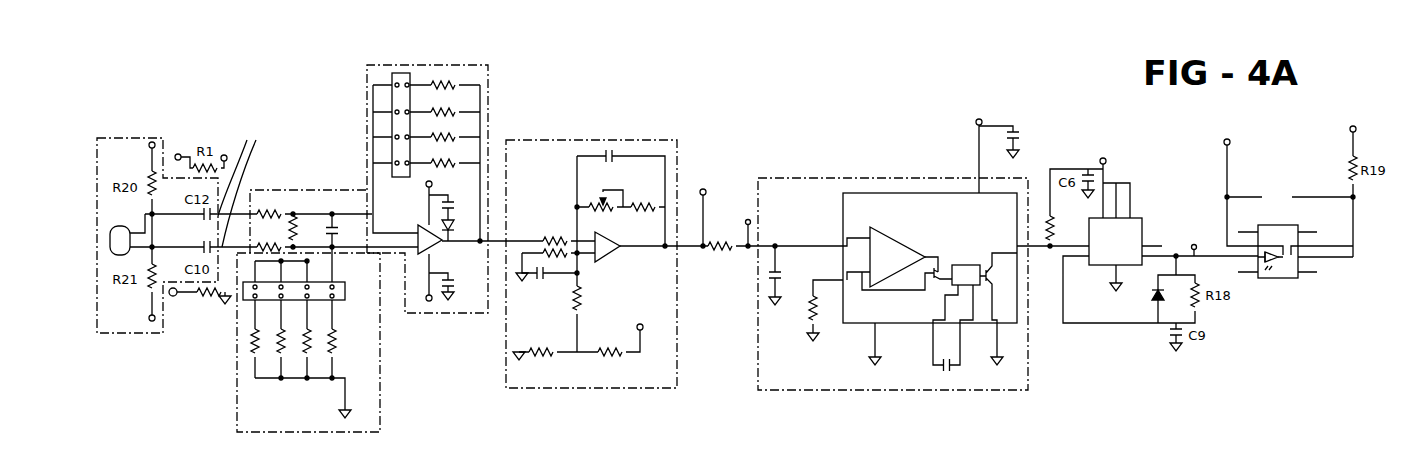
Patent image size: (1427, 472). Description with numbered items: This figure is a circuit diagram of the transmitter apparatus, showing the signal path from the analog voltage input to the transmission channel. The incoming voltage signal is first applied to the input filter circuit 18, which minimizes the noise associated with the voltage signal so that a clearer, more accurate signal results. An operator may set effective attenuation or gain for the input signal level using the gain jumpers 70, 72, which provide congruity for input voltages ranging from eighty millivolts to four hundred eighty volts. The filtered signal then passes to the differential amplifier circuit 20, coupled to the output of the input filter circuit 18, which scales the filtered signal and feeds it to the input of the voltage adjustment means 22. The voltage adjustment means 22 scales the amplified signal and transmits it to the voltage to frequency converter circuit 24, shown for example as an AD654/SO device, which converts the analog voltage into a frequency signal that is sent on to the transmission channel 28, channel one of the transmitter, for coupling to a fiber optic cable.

The input filter circuit 18 is at (312, 190).
The differential amplifier circuit 20 is at (333, 140).
The voltage adjustment means 22 is at (597, 138).
The voltage to frequency converter circuit 24 is at (893, 175).
The transmission channel 28 is at (241, 184).
The gain jumper 70 is at (345, 337).
The gain jumper 72 is at (495, 127).